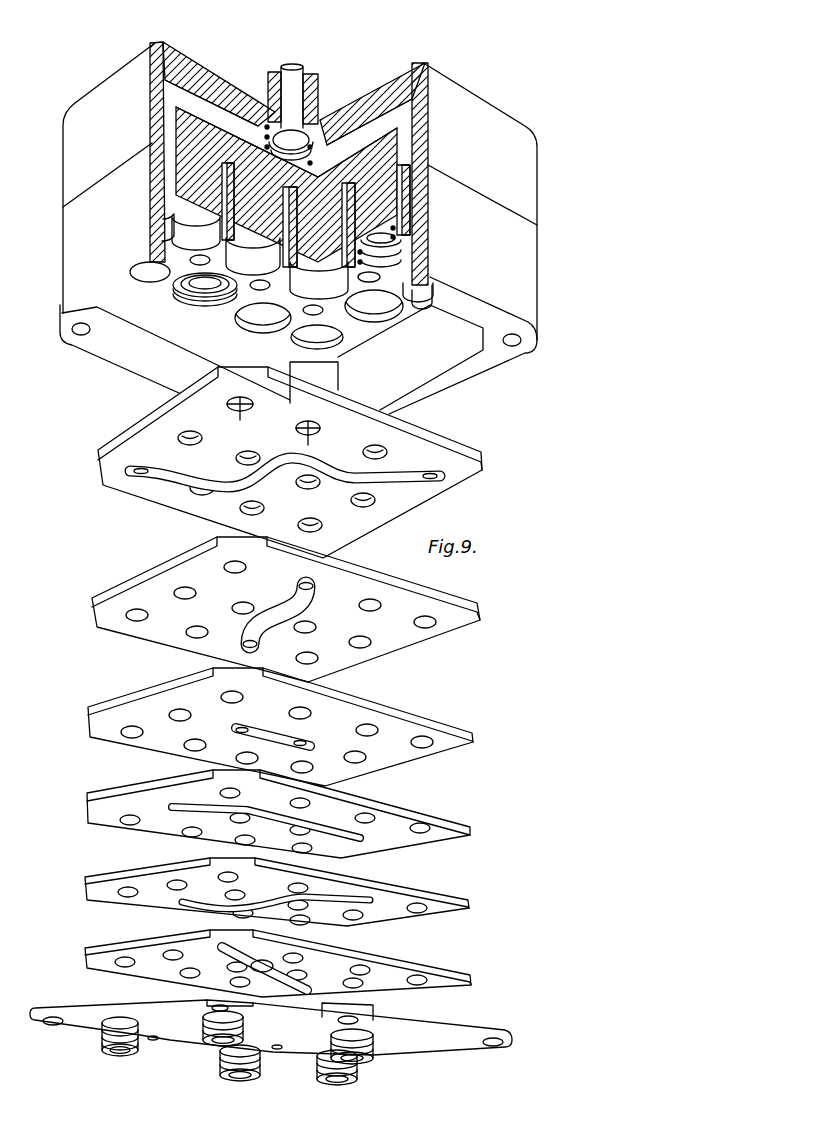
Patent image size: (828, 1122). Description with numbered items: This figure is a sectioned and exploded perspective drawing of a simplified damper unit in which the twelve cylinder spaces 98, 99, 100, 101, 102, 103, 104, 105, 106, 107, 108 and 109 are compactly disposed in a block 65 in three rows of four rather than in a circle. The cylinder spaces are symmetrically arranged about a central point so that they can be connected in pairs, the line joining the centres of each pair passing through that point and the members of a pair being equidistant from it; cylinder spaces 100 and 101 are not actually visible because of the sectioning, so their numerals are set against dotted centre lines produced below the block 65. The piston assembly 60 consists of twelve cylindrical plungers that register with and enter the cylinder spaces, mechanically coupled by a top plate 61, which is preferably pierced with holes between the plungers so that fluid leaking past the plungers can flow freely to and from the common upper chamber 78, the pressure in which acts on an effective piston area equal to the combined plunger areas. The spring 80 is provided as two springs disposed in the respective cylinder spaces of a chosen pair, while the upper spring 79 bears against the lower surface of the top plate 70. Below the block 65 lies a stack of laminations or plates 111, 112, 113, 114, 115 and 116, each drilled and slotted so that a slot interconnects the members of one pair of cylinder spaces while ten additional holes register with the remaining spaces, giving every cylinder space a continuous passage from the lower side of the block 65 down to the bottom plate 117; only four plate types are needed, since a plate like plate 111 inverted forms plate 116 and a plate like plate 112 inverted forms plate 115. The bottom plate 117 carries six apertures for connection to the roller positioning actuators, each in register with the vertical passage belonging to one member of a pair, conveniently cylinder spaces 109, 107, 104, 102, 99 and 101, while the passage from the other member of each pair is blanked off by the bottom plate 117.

The piston assembly 60 is at (378, 96).
The top plate 61 is at (398, 152).
The block 65 is at (412, 320).
The top plate 70 is at (363, 148).
The upper chamber 78 is at (201, 100).
The upper spring 79 is at (286, 120).
The spring 80 is at (188, 303).
The cylinder space 98 is at (447, 288).
The cylinder space 99 is at (430, 268).
The cylinder space 100 is at (310, 410).
The cylinder space 101 is at (242, 386).
The cylinder space 102 is at (383, 320).
The cylinder space 103 is at (323, 296).
The cylinder space 104 is at (258, 272).
The cylinder space 105 is at (172, 226).
The cylinder space 106 is at (343, 350).
The cylinder space 107 is at (242, 328).
The cylinder space 108 is at (207, 282).
The cylinder space 109 is at (150, 272).
The plate 111 is at (313, 462).
The plate 112 is at (477, 622).
The plate 113 is at (470, 744).
The plate 114 is at (470, 830).
The plate 115 is at (471, 907).
The plate 116 is at (470, 977).
The bottom plate 117 is at (60, 1008).